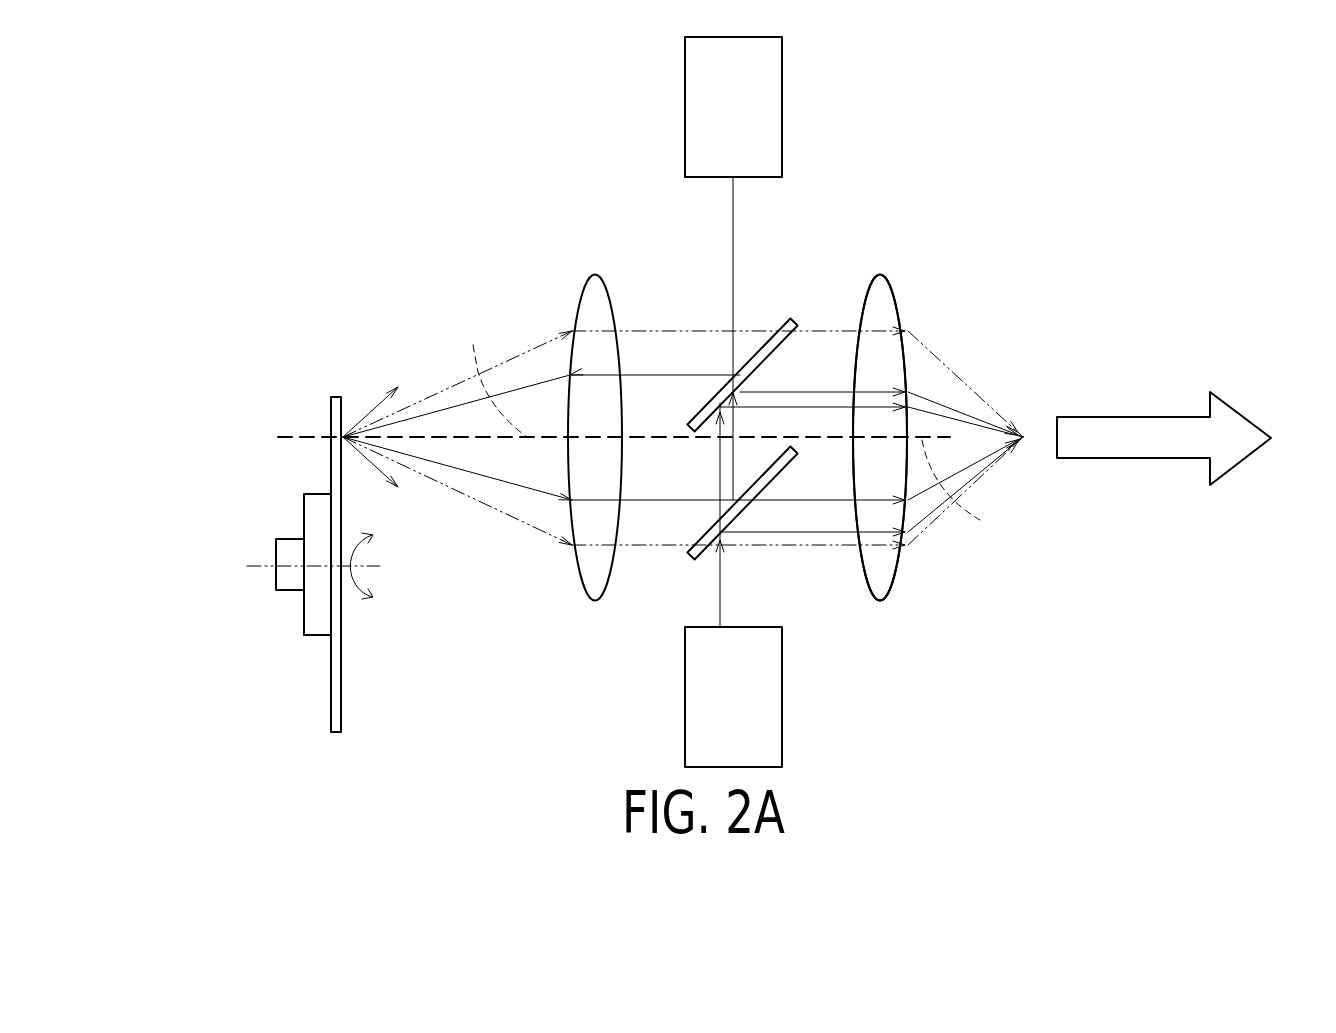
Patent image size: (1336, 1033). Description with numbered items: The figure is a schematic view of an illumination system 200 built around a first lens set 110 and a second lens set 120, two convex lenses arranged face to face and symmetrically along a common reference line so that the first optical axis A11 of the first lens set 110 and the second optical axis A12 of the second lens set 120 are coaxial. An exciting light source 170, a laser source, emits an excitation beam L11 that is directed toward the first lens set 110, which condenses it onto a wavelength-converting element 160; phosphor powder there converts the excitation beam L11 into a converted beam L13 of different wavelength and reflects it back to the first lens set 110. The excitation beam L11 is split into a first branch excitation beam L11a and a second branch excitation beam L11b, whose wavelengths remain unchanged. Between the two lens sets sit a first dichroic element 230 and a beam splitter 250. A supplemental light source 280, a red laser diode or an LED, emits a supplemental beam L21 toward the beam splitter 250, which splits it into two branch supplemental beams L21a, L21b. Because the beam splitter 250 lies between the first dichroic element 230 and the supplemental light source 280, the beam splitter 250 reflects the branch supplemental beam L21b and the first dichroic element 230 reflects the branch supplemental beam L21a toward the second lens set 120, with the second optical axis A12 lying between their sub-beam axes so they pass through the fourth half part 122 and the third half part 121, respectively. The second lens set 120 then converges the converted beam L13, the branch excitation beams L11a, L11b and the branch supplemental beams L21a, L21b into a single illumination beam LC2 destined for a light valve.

The illumination system 200 is at (287, 165).
The exciting light source 170 is at (751, 126).
The supplemental light source 280 is at (751, 714).
The first lens set 110 is at (594, 258).
The second lens set 120 is at (879, 258).
The third half part 121 is at (882, 313).
The fourth half part 122 is at (882, 563).
The wavelength-converting element 160 is at (335, 412).
The first dichroic element 230 is at (792, 318).
The beam splitter 250 is at (688, 554).
The excitation beam L11 is at (733, 200).
The first branch excitation beam L11a is at (842, 502).
The second branch excitation beam L11b is at (742, 420).
The supplemental beam L21 is at (719, 603).
The branch supplemental beam L21a is at (718, 448).
The branch supplemental beam L21b is at (826, 540).
The converted beam L13 is at (440, 392).
The first optical axis A11 is at (492, 377).
The second optical axis A12 is at (961, 494).
The illumination beam LC2 is at (1138, 432).